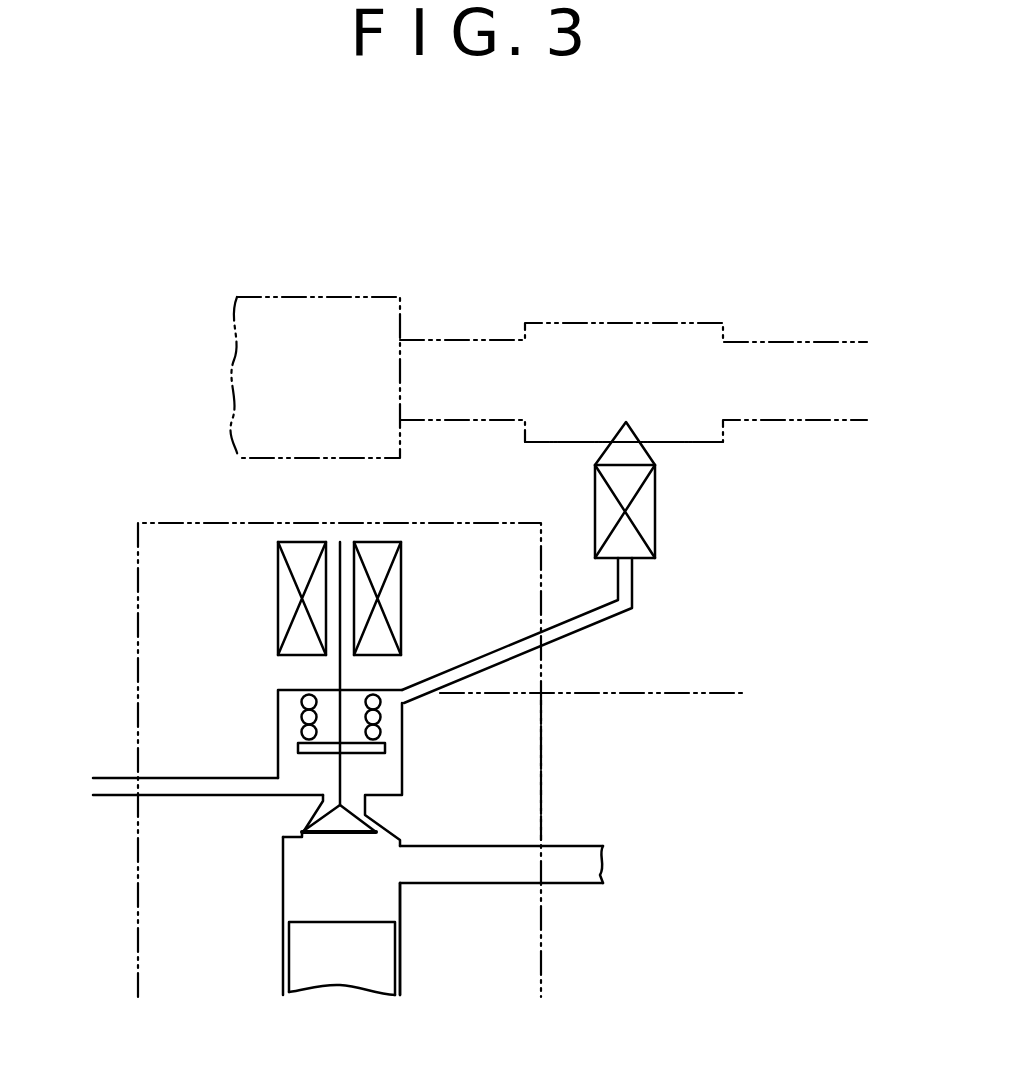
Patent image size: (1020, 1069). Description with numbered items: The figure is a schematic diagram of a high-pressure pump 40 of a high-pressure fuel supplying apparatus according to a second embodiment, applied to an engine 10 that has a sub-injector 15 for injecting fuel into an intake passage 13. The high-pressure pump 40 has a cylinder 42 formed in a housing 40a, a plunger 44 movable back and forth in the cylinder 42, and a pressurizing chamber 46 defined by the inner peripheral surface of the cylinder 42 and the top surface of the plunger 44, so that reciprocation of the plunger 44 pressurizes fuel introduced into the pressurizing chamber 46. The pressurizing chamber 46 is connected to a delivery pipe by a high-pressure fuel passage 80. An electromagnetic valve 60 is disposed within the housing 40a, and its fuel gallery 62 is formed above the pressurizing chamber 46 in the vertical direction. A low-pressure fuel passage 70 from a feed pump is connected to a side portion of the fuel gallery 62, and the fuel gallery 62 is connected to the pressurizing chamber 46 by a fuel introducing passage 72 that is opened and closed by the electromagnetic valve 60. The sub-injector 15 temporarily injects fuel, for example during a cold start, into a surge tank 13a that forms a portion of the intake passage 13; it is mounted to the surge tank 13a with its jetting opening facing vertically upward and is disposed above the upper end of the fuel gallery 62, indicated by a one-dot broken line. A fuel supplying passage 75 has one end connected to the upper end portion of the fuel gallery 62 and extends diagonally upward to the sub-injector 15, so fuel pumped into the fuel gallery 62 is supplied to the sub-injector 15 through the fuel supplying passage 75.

The engine 10 is at (402, 320).
The intake passage 13 is at (847, 422).
The surge tank 13a is at (712, 443).
The sub-injector 15 is at (656, 545).
The high-pressure pump 40 is at (414, 513).
The housing 40a is at (542, 770).
The electromagnetic valve 60 is at (262, 590).
The fuel gallery 62 is at (403, 768).
The low-pressure fuel passage 70 is at (120, 786).
The fuel introducing passage 72 is at (326, 812).
The fuel supplying passage 75 is at (596, 622).
The high-pressure fuel passage 80 is at (558, 848).
The cylinder 42 is at (402, 955).
The plunger 44 is at (300, 950).
The pressurizing chamber 46 is at (295, 890).